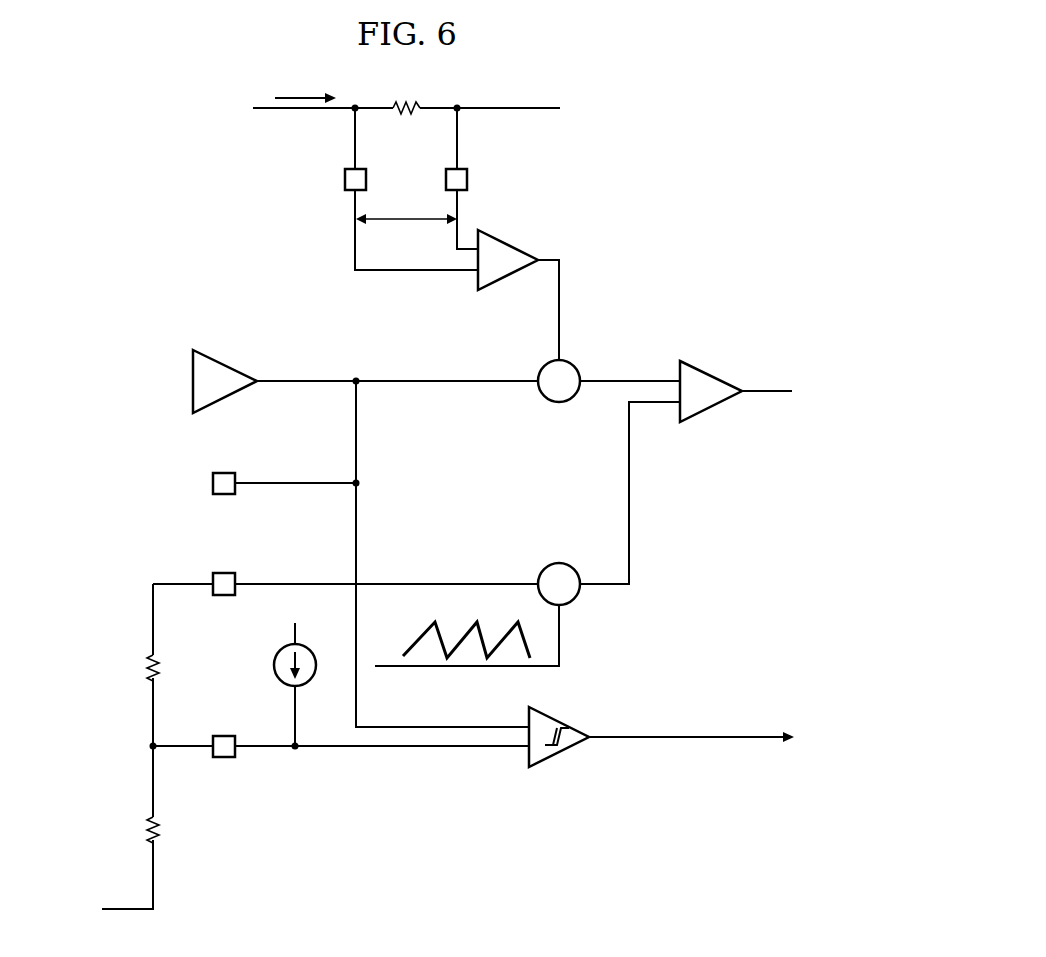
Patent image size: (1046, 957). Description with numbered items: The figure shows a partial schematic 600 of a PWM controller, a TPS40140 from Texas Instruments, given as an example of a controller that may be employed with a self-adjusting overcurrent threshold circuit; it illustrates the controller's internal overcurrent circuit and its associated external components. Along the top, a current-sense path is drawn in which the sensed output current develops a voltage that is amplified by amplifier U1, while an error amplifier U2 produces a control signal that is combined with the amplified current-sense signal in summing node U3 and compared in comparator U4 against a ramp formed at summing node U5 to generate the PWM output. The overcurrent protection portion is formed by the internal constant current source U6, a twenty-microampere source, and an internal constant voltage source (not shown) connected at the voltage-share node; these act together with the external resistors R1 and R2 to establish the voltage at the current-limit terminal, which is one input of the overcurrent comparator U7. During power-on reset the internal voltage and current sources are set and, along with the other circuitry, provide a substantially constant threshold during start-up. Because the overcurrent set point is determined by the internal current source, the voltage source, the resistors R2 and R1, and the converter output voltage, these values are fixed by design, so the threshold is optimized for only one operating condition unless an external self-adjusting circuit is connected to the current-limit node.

The PWM controller partial schematic 600 is at (748, 72).
The current sense amplifier U1 is at (508, 251).
The error amplifier U2 is at (225, 373).
The summing node U3 is at (567, 372).
The PWM comparator U4 is at (711, 382).
The ramp summing node U5 is at (568, 595).
The constant current source U6 is at (304, 684).
The over current comparator U7 is at (559, 747).
The resistor R1 is at (139, 667).
The resistor R2 is at (139, 828).